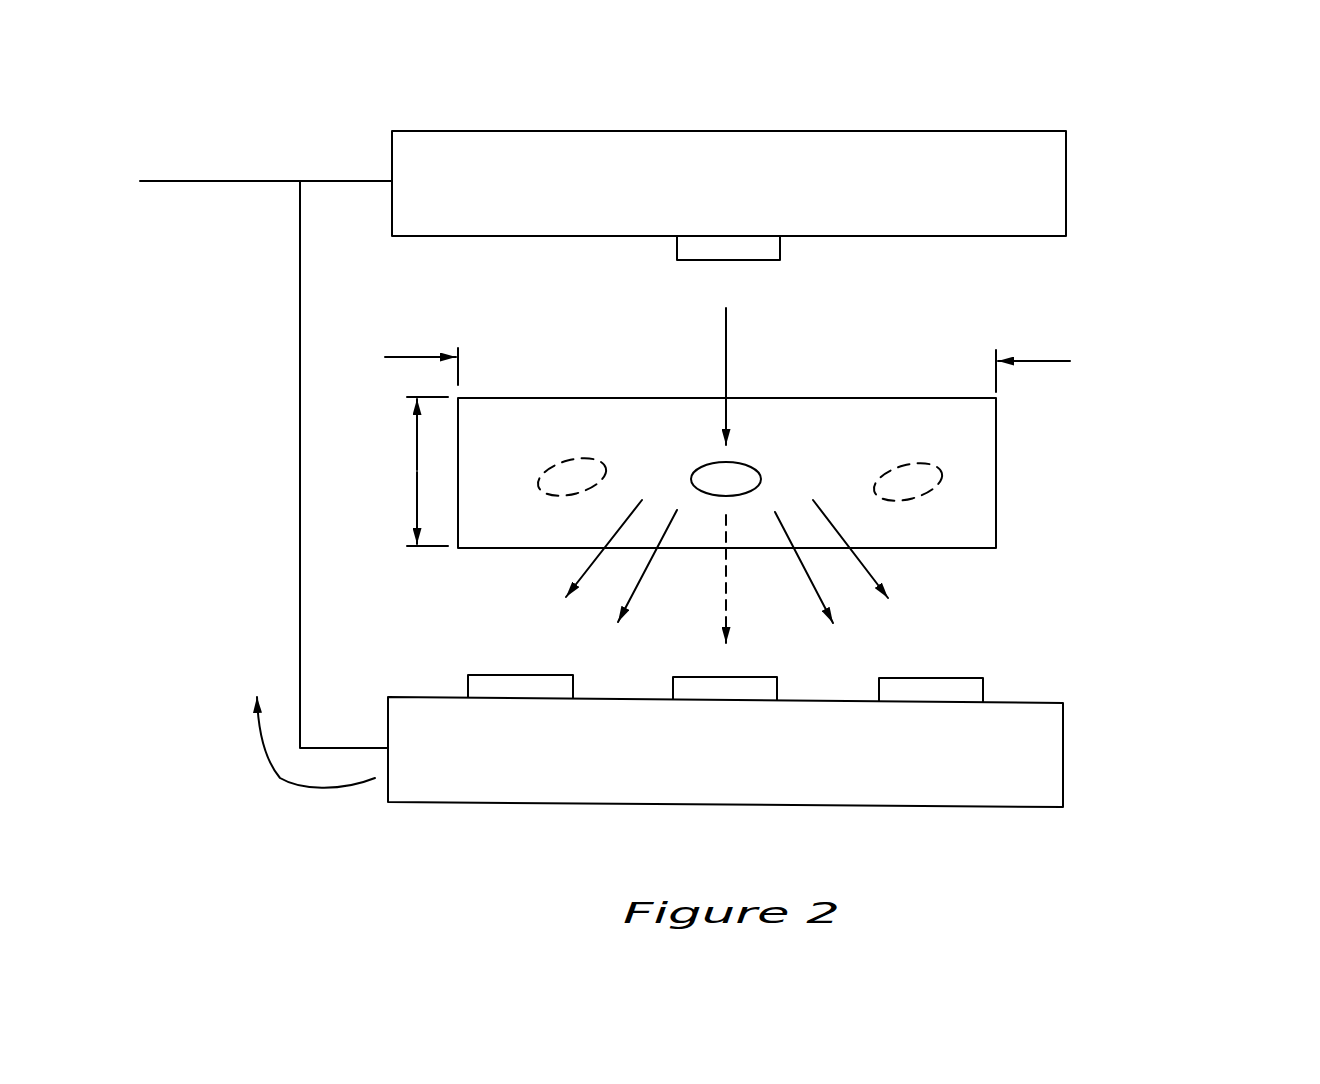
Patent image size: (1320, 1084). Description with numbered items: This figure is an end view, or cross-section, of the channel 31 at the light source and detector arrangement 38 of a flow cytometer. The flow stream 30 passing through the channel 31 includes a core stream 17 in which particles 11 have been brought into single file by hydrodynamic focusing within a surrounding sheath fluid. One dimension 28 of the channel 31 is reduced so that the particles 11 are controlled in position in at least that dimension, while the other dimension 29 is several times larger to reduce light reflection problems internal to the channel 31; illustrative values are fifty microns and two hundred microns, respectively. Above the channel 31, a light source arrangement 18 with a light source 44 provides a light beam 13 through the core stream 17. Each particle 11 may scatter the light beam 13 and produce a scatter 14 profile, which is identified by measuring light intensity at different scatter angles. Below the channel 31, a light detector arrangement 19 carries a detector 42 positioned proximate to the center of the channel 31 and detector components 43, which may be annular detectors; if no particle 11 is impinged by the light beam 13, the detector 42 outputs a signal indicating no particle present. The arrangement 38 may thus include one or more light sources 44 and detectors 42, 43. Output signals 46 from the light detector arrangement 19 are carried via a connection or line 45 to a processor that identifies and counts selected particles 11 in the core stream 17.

The particles 11 is at (568, 462).
The light beam 13 is at (726, 342).
The scatter 14 is at (583, 567).
The core stream 17 is at (688, 470).
The light source arrangement 18 is at (1058, 208).
The light detector arrangement 19 is at (1063, 775).
The dimension of the channel 28 is at (417, 472).
The other dimension of the channel 29 is at (1050, 361).
The flow stream 30 is at (836, 412).
The channel 31 is at (996, 549).
The light source and detector arrangement 38 is at (1117, 150).
The detector 42 is at (678, 674).
The detector component 43 is at (478, 672).
The light source 44 is at (768, 262).
The connection or line 45 is at (217, 180).
The output signals 46 is at (280, 778).